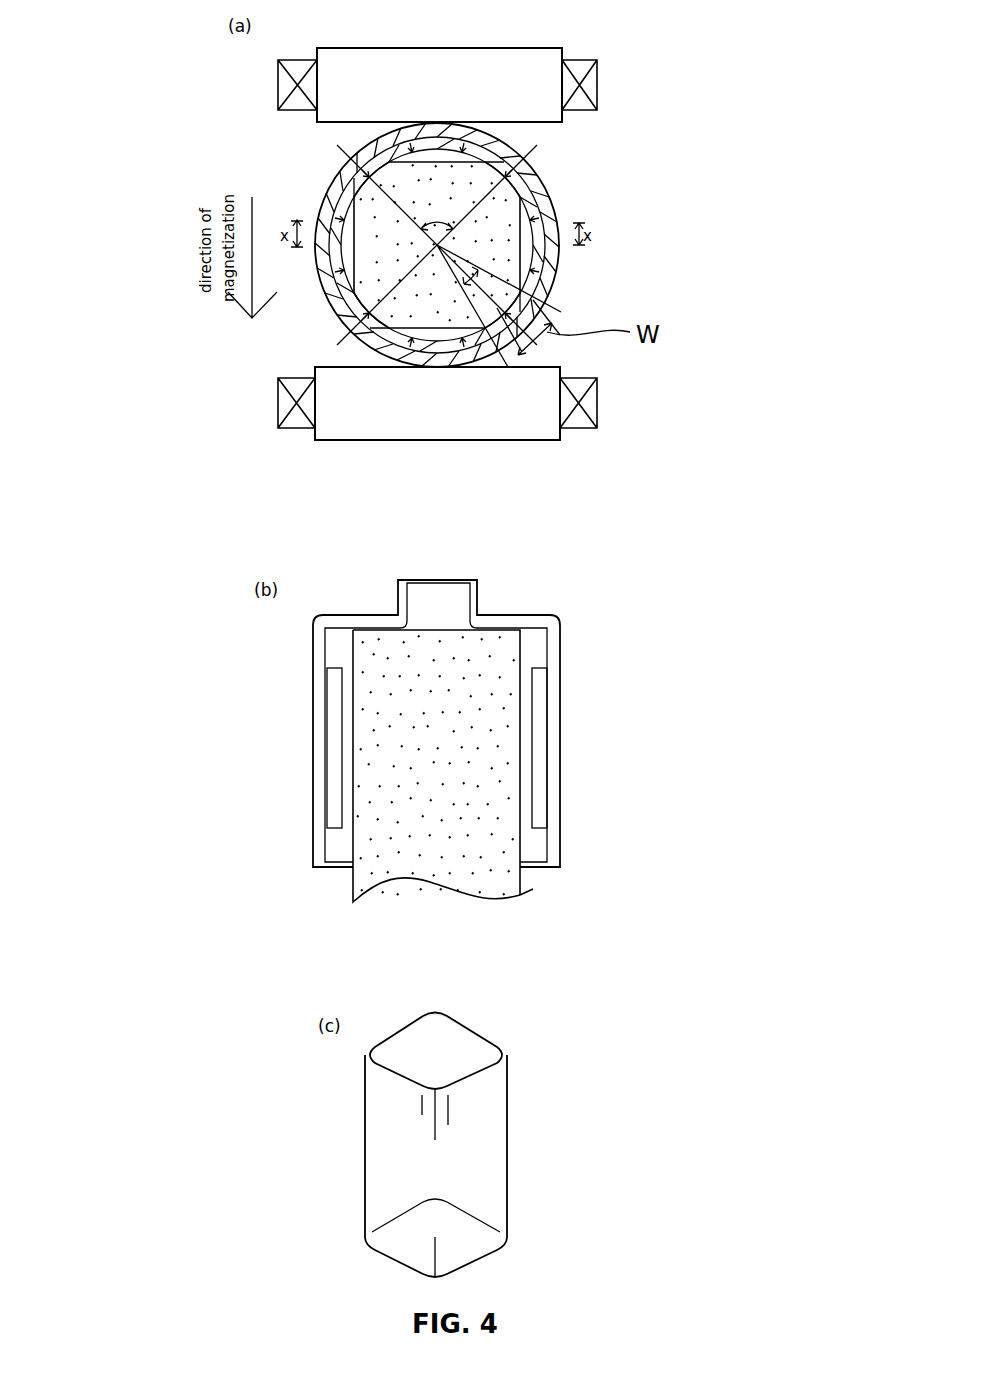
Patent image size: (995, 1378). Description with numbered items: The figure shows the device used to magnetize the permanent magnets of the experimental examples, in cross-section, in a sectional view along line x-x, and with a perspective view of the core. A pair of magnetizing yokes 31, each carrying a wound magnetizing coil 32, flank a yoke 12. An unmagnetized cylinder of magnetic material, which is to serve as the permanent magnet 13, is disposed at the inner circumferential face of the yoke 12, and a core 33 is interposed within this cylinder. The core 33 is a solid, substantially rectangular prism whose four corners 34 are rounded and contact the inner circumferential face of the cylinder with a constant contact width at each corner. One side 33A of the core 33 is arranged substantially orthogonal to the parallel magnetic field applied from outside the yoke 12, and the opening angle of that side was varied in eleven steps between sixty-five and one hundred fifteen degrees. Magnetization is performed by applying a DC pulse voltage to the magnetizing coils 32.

The yoke 12 is at (548, 185).
The permanent magnet 13 is at (557, 202).
The magnetizing yoke 31 is at (458, 77).
The magnetizing coil 32 is at (593, 83).
The core 33 is at (500, 250).
The side of core 33A is at (387, 132).
The corner of core 34 is at (507, 1052).